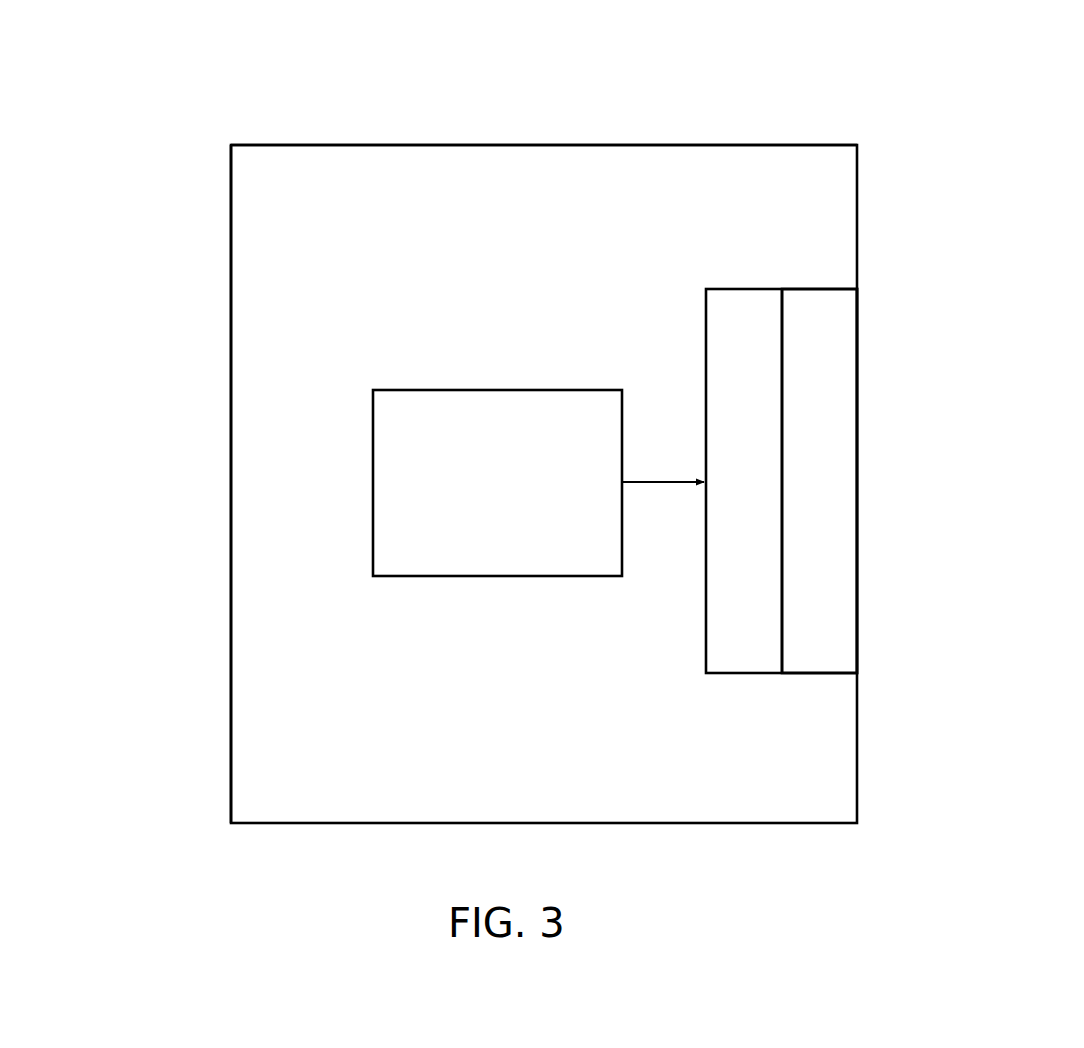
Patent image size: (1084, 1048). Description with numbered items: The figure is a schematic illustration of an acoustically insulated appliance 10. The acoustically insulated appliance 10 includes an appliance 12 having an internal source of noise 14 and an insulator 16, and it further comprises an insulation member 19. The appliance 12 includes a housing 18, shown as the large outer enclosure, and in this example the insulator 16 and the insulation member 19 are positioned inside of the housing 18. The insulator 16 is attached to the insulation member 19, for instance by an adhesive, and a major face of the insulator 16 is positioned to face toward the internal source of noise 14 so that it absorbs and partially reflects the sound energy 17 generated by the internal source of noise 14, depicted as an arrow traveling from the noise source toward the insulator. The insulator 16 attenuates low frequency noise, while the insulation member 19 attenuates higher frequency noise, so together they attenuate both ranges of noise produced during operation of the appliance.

The acoustically insulated appliance 10 is at (655, 114).
The appliance 12 is at (226, 159).
The internal source of noise 14 is at (518, 495).
The insulator 16 is at (704, 347).
The sound energy 17 is at (650, 478).
The housing 18 is at (230, 410).
The insulation member 19 is at (815, 284).